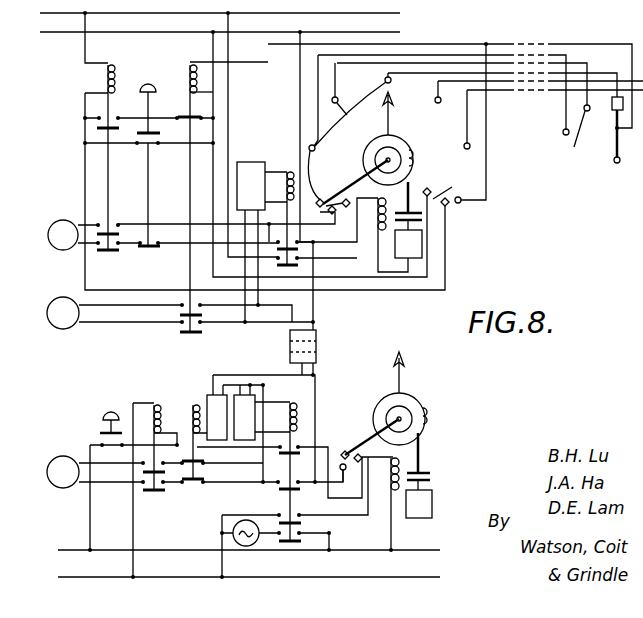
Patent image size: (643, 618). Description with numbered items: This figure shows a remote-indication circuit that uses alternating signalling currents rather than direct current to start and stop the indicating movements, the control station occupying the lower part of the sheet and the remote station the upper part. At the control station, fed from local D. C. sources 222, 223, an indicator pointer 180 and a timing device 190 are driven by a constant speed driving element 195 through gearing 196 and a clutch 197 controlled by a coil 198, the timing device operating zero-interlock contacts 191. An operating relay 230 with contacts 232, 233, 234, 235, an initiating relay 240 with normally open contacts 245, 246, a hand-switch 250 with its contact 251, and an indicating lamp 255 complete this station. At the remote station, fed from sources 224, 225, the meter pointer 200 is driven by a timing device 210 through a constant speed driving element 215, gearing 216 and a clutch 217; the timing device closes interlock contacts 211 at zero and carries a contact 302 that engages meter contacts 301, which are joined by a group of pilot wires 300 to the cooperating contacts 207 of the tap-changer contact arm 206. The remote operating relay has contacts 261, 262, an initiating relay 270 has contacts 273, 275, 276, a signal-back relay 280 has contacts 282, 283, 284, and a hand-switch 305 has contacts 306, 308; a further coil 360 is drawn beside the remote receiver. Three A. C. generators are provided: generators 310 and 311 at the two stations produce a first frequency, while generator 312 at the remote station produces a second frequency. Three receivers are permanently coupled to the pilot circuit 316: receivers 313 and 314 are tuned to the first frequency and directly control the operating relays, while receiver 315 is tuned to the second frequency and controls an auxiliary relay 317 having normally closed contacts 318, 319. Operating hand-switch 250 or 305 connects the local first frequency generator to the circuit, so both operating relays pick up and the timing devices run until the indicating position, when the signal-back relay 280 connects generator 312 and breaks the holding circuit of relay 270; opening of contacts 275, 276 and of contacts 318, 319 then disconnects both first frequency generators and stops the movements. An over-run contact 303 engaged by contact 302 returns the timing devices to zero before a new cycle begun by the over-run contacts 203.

The D. C. busbar 225 is at (238, 12).
The local D. C. source of power 224 is at (238, 30).
The group of pilot wires 300 is at (525, 56).
The initiating relay 270 is at (104, 79).
The hand-switch 305 is at (143, 84).
The signal-back relay 280 is at (184, 78).
The signal-back relay contact 282 is at (186, 116).
The initiating relay contact 273 is at (96, 128).
The hand-switch contact 306 is at (158, 136).
The receiver 313 is at (247, 161).
The relay coil 360 is at (281, 172).
The meter contacts 301 is at (345, 99).
The timing device contact 302 is at (349, 127).
The meter pointer 200 is at (396, 123).
The timing device 210 is at (362, 178).
The interlock contacts 211 is at (340, 188).
The gearing 216 is at (419, 163).
The over-run contacts 203 is at (447, 190).
The over-run contact 303 is at (461, 203).
The cooperating contacts 207 is at (566, 135).
The contact arm 206 is at (612, 158).
The initiating relay contact 275 is at (98, 226).
The A. C. generator 311 is at (63, 250).
The initiating relay contact 276 is at (111, 251).
The hand-switch contact 308 is at (156, 248).
The clutch 217 is at (425, 220).
The constant speed driving element 215 is at (420, 246).
The operating relay contact 262 is at (292, 266).
The operating relay contact 261 is at (302, 247).
The A. C. generator 312 is at (63, 329).
The signal-back relay contact 283 is at (178, 317).
The signal-back relay contact 284 is at (201, 334).
The pilot or other circuit 316 is at (318, 343).
The indicator pointer 180 is at (404, 374).
The hand-switch 250 is at (106, 413).
The initiating relay 240 is at (154, 404).
The auxiliary relay 317 is at (191, 404).
The receiver 315 is at (215, 401).
The receiver 314 is at (243, 394).
The operating relay 230 is at (300, 405).
The operating relay contact 232 is at (297, 447).
The timing device 190 is at (358, 441).
The zero-interlock contacts 191 is at (342, 460).
The gearing 196 is at (429, 418).
The hand-switch contact 251 is at (100, 434).
The coil 198 is at (401, 467).
The clutch 197 is at (432, 477).
The A. C. generator 310 is at (63, 488).
The initiating relay contact 245 is at (141, 474).
The initiating relay contact 246 is at (158, 492).
The auxiliary relay contact 318 is at (203, 481).
The auxiliary relay contact 319 is at (193, 483).
The operating relay contact 233 is at (280, 490).
The constant speed driving element 195 is at (434, 505).
The local D. C. source of power 222 is at (269, 551).
The local D. C. source of power 223 is at (269, 578).
The indicating lamp 255 is at (243, 547).
The operating relay contact 235 is at (290, 545).
The operating relay contact 234 is at (302, 526).